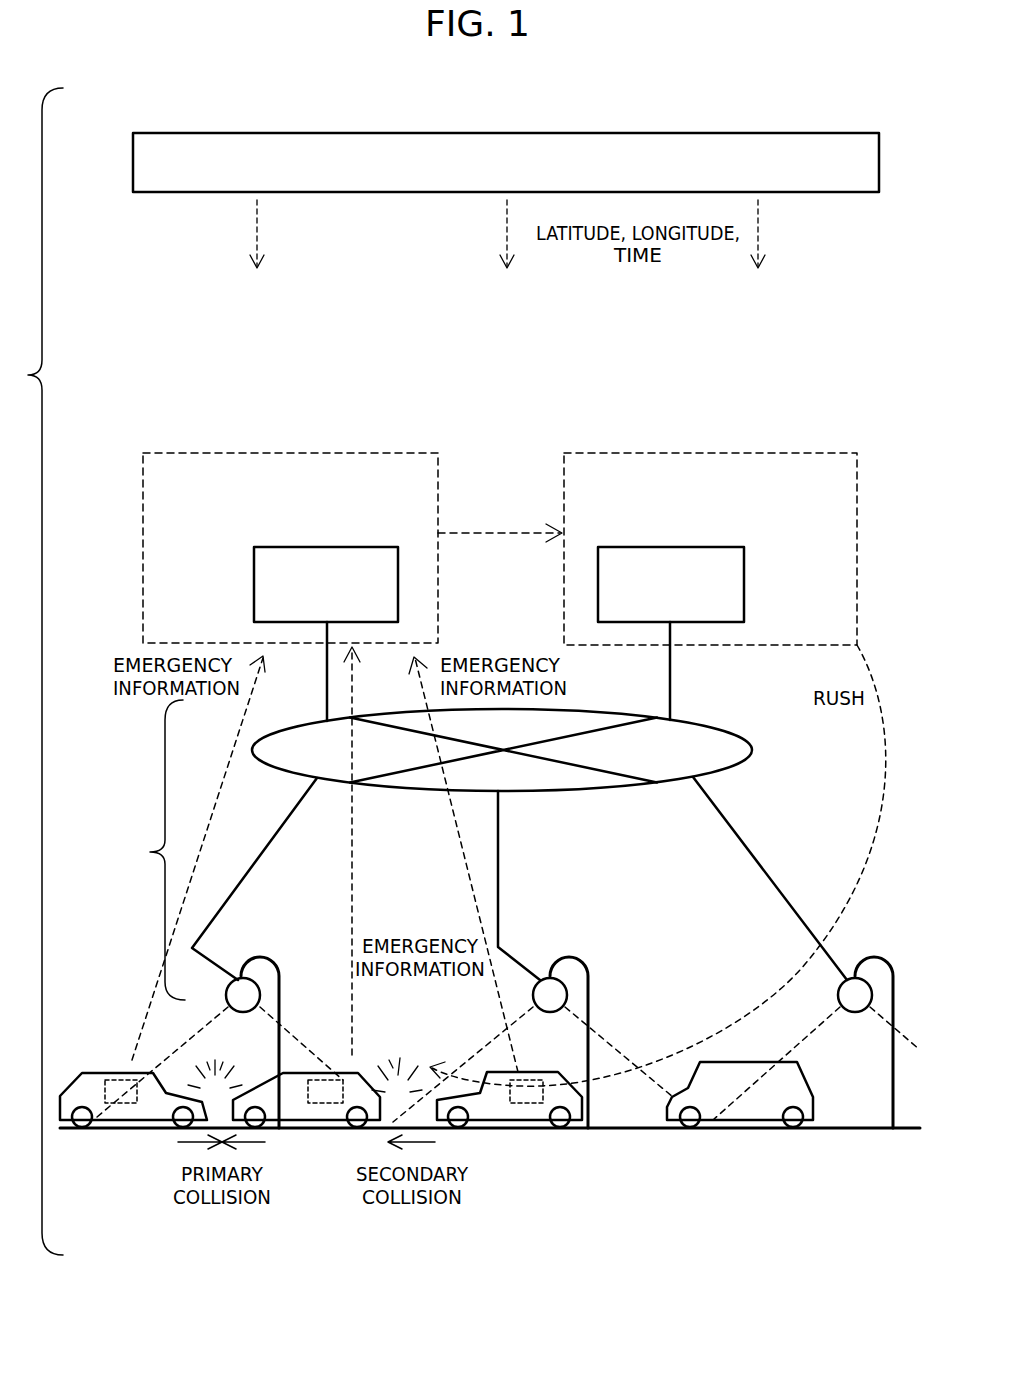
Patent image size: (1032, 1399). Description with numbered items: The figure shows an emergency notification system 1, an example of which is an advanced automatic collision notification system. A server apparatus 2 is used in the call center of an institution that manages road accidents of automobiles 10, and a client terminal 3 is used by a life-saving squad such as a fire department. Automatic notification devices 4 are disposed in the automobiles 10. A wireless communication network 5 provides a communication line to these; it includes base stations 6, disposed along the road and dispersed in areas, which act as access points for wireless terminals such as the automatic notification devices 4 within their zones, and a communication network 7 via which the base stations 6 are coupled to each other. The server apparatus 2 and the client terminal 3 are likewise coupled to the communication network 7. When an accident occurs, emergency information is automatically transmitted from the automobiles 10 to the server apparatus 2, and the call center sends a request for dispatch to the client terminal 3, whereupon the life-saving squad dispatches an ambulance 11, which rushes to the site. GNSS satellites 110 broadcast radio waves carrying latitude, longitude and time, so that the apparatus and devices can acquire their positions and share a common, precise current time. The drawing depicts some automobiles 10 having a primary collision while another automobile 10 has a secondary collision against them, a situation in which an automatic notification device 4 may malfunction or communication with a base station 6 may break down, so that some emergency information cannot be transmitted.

The GNSS satellite 110 is at (676, 133).
The emergency notification system 1 is at (510, 425).
The server apparatus 2 is at (398, 585).
The client terminal 3 is at (744, 585).
The communication network 7 is at (752, 750).
The wireless communication network 5 is at (148, 850).
The base station 6 is at (241, 978).
The automobile 10 is at (127, 1128).
The automatic notification device 4 is at (140, 1105).
The ambulance 11 is at (770, 1128).